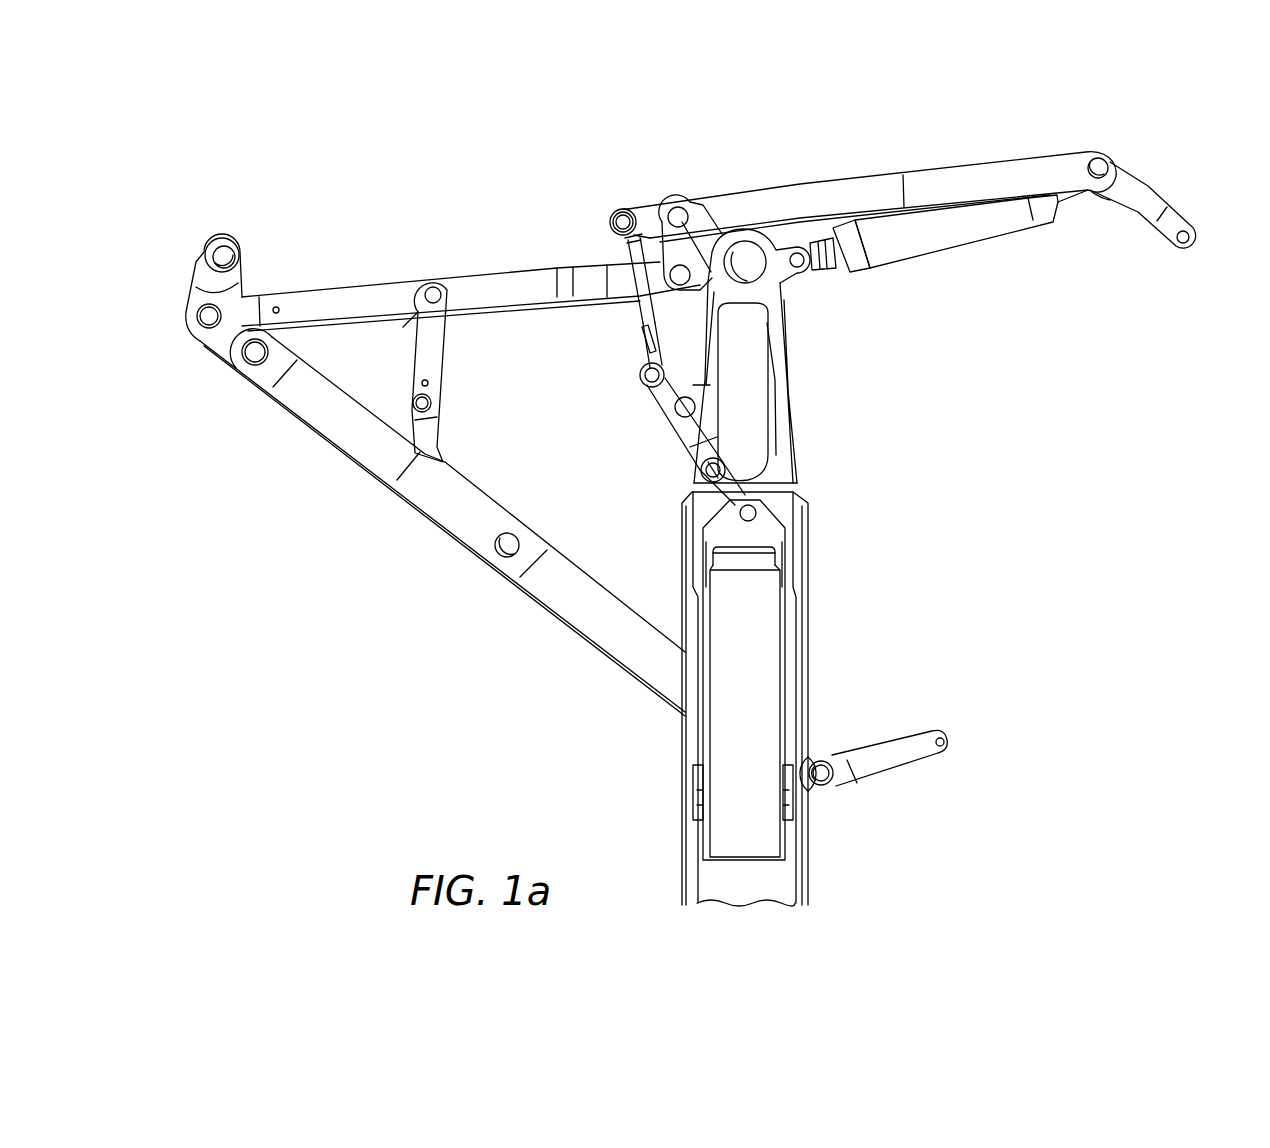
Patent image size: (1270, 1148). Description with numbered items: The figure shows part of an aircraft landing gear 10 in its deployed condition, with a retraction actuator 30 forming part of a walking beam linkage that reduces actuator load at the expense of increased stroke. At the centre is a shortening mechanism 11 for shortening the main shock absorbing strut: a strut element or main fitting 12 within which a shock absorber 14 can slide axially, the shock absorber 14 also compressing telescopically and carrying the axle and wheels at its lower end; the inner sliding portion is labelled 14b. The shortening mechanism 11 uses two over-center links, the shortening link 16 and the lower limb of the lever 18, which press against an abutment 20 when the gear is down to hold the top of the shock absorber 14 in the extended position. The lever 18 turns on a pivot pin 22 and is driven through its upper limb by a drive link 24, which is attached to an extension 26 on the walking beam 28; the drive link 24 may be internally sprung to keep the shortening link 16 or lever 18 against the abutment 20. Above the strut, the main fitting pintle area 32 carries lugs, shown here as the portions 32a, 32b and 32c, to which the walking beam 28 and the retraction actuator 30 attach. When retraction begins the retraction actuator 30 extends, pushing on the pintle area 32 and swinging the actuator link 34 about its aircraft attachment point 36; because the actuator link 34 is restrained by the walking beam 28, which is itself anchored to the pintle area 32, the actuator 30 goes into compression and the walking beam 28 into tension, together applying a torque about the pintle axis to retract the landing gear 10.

The aircraft landing gear 10 is at (1022, 138).
The shortening mechanism 11 is at (624, 357).
The main fitting 12 is at (808, 712).
The shock absorber 14 is at (790, 618).
The inner cylinder 14b is at (760, 658).
The shortening link 16 is at (783, 477).
The lever 18 is at (667, 397).
The abutment 20 is at (697, 463).
The pivot pin 22 is at (692, 407).
The drive link 24 is at (640, 310).
The extension 26 is at (650, 212).
The walking beam 28 is at (818, 190).
The retraction actuator 30 is at (957, 236).
The main fitting pintle area 32 is at (752, 248).
The hub lug 32a is at (783, 280).
The lever 32b is at (707, 212).
The hub arm 32c is at (695, 388).
The actuator link 34 is at (1145, 198).
The aircraft attachment point 36 is at (1187, 240).